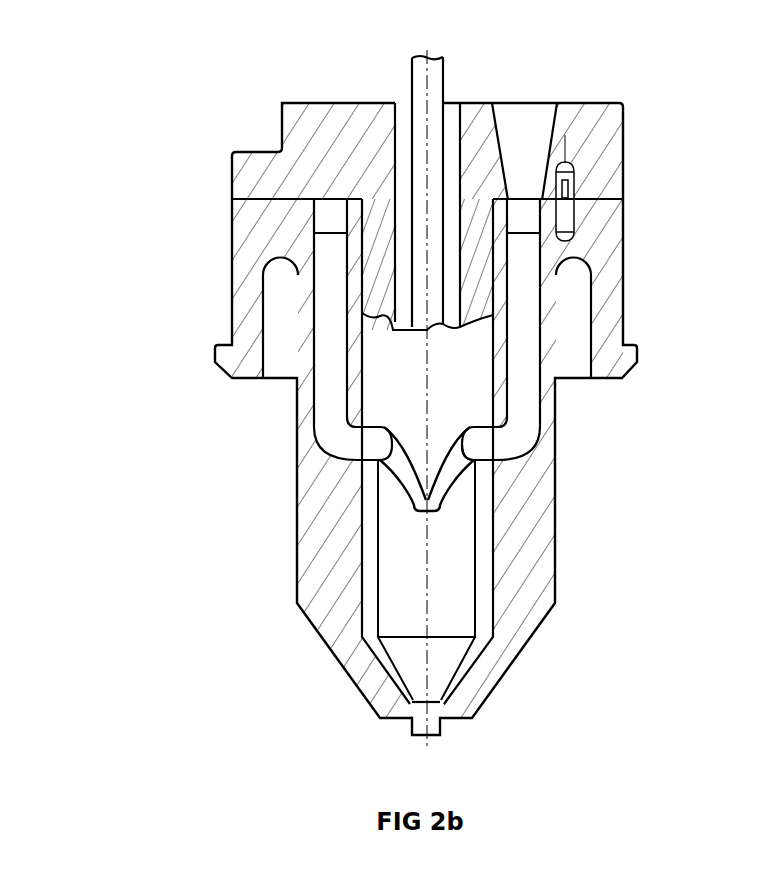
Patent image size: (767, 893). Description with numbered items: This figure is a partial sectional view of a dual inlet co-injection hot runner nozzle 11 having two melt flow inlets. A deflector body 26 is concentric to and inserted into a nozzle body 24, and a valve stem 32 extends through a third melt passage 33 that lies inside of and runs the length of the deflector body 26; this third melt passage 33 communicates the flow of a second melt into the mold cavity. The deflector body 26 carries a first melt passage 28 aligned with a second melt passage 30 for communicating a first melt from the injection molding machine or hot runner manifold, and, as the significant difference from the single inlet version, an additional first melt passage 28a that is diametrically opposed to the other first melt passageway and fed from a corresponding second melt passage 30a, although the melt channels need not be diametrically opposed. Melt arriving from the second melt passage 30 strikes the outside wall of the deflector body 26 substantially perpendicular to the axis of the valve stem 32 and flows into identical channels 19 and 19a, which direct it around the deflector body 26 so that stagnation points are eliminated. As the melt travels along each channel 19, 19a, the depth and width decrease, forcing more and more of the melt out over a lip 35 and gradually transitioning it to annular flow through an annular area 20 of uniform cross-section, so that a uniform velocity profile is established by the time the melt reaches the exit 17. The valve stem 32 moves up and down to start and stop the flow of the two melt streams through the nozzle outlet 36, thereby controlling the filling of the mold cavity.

The co-injection hot runner nozzle 11 is at (583, 642).
The exit 17 is at (418, 577).
The channel 19 is at (447, 467).
The channel 19a is at (418, 500).
The annular area 20 is at (372, 511).
The nozzle body 24 is at (607, 318).
The deflector body 26 is at (607, 168).
The first melt passage 28 is at (530, 132).
The additional first melt passage 28a is at (325, 218).
The second melt passage 30 is at (532, 245).
The second melt passage 30a is at (332, 307).
The valve stem 32 is at (425, 76).
The third melt passage 33 is at (452, 167).
The lip 35 is at (453, 453).
The nozzle outlet 36 is at (438, 735).